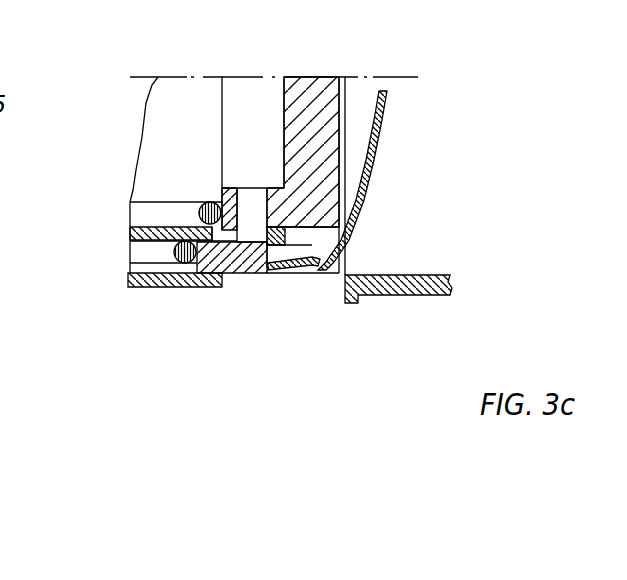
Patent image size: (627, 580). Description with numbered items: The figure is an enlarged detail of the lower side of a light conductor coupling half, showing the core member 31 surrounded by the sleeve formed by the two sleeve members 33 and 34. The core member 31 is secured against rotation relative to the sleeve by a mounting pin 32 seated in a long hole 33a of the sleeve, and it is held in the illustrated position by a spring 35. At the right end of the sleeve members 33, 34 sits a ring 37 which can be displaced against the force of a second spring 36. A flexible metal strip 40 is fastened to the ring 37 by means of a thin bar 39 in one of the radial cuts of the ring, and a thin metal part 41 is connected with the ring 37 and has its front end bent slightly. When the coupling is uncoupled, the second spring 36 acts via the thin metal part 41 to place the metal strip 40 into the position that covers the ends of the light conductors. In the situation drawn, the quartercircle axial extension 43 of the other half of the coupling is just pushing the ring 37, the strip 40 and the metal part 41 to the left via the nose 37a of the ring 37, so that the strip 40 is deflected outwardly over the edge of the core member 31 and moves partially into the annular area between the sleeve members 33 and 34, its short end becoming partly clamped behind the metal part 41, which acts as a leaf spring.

The core member 31 is at (360, 188).
The mounting pin 32 is at (250, 202).
The sleeve member 33 is at (130, 232).
The long hole 33a is at (232, 241).
The sleeve member 34 is at (133, 287).
The spring 35 is at (209, 202).
The second spring 36 is at (185, 258).
The ring 37 is at (254, 256).
The nose 37a is at (339, 273).
The thin bar 39 is at (322, 259).
The flexible metal strip 40 is at (383, 113).
The thin metal part 41 is at (297, 273).
The quartercircle axial extension 43 is at (405, 295).